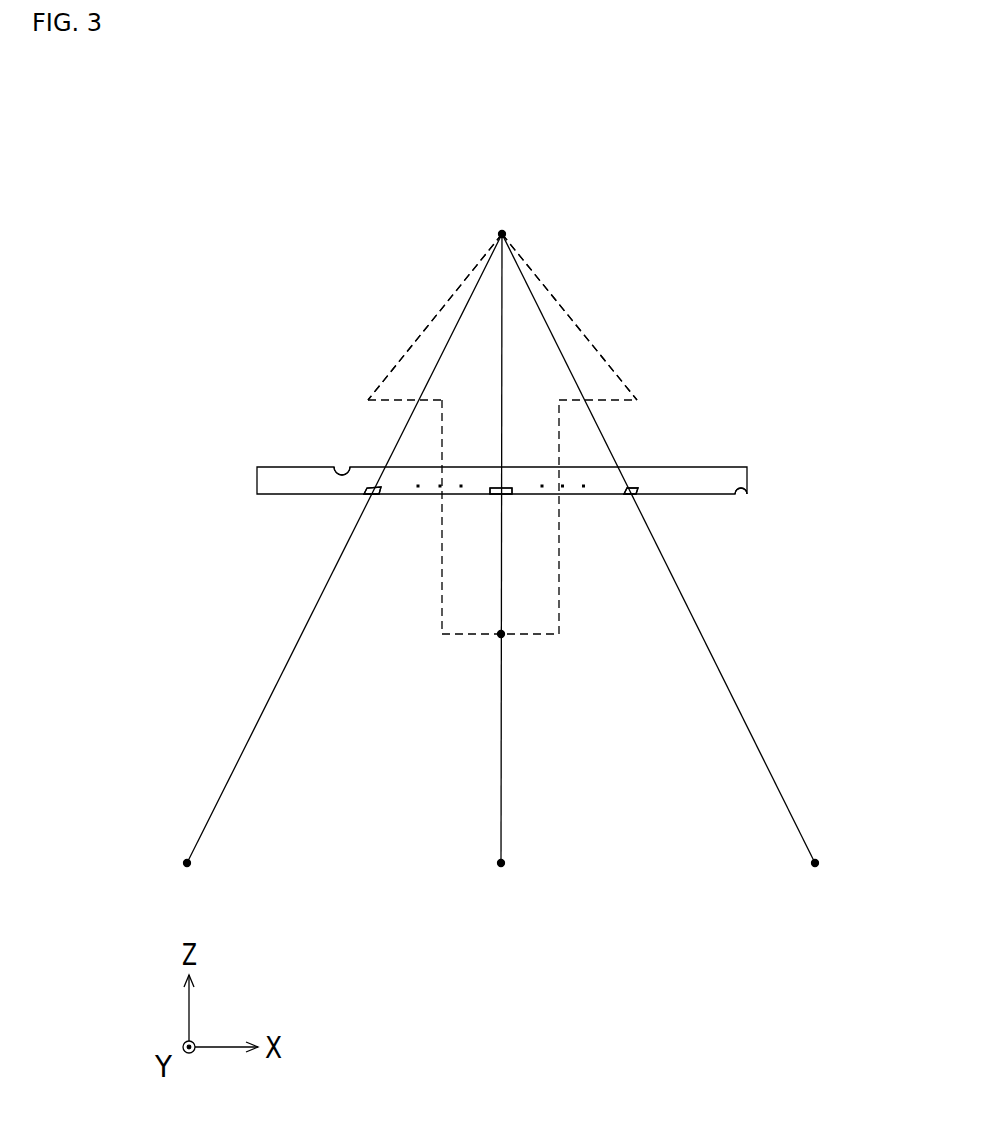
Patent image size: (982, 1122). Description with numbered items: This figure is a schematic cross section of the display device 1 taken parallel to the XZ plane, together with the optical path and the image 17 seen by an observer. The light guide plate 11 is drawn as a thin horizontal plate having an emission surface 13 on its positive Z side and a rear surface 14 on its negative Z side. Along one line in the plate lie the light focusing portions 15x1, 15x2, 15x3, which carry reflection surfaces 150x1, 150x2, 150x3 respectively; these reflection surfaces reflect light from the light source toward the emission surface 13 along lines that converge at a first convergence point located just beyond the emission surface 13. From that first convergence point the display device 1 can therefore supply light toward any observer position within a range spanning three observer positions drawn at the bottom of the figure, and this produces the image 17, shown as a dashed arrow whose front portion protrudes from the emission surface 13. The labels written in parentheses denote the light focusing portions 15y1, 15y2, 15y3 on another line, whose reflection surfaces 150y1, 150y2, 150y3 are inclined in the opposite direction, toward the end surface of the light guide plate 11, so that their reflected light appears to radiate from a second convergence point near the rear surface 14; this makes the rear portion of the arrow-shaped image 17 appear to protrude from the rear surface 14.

The display device 1 is at (504, 549).
The light guide plate 11 is at (268, 480).
The emission surface 13 is at (340, 471).
The rear surface 14 is at (743, 490).
The light focusing portion 15x1 is at (449, 601).
The light focusing portion 15y1 is at (497, 495).
The light focusing portion 15x2 is at (315, 537).
The light focusing portion 15y2 is at (360, 497).
The light focusing portion 15x3 is at (616, 546).
The light focusing portion 15y3 is at (627, 495).
The reflection surface 150x1 is at (611, 435).
The reflection surface 150y1 is at (512, 490).
The reflection surface 150x2 is at (389, 550).
The reflection surface 150y2 is at (378, 487).
The reflection surface 150x3 is at (698, 527).
The reflection surface 150y3 is at (632, 487).
The image 17 is at (566, 311).